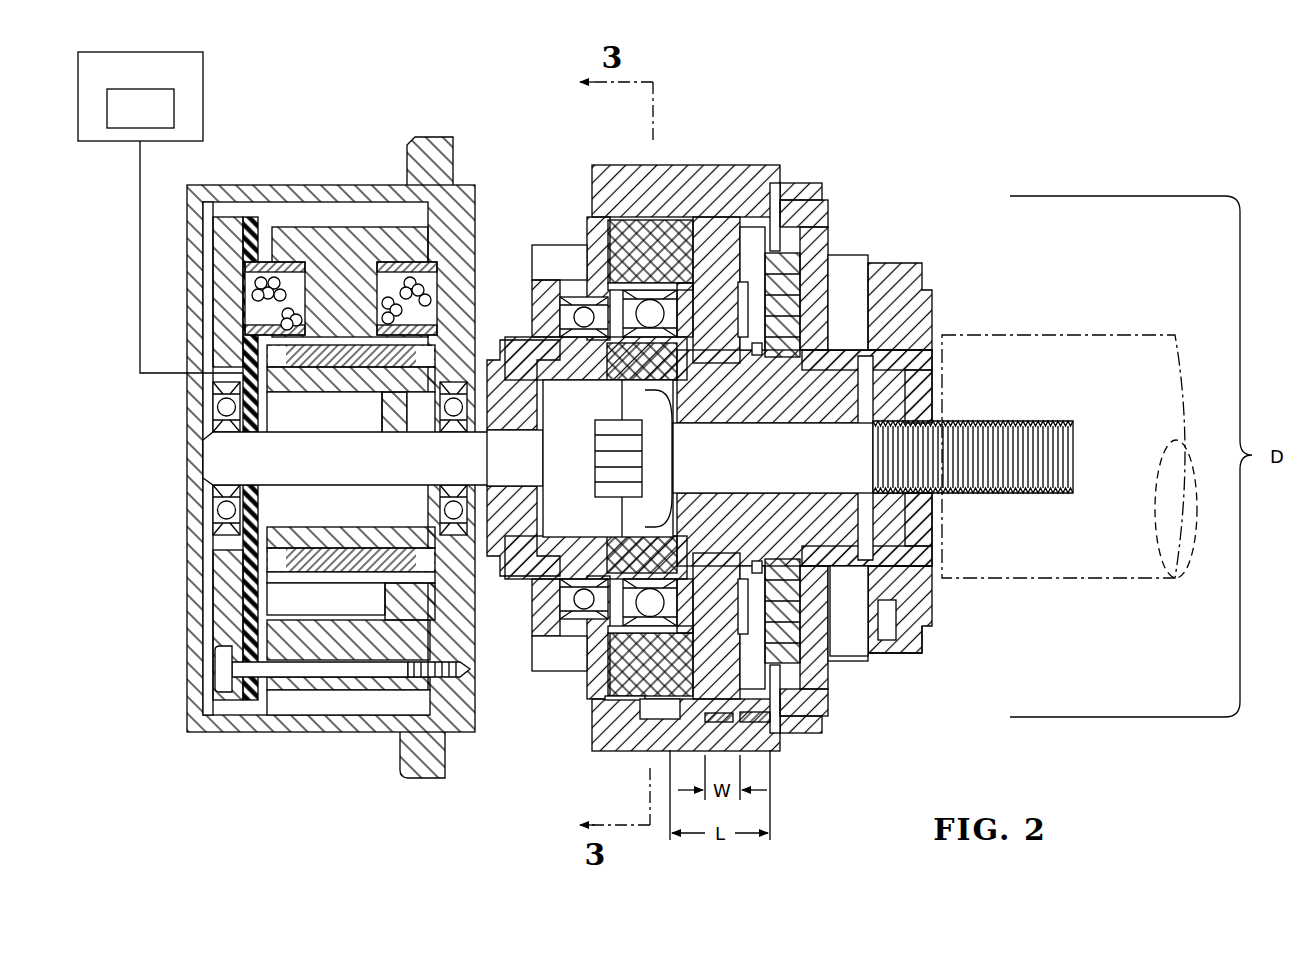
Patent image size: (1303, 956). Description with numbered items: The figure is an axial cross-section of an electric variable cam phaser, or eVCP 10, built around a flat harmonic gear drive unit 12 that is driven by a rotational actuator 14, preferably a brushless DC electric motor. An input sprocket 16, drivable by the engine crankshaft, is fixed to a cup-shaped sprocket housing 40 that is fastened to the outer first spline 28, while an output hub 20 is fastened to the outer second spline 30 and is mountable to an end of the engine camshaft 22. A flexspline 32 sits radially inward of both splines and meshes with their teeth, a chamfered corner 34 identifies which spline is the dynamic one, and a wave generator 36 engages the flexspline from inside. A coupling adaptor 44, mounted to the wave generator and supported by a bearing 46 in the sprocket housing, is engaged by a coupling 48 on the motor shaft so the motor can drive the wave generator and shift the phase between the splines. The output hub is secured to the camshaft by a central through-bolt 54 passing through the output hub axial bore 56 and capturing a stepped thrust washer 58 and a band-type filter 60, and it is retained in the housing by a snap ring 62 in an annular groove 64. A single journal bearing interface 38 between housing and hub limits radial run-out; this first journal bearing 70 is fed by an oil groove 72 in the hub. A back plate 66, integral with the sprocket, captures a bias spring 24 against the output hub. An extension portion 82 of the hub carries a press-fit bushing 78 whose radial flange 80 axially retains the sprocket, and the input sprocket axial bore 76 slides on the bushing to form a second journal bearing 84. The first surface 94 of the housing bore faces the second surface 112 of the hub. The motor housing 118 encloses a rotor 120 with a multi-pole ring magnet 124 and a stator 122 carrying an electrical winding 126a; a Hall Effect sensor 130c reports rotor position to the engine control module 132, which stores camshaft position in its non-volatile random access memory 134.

The eVCP 10 is at (1010, 138).
The flat harmonic gear drive unit 12 is at (650, 210).
The rotational actuator 14 is at (138, 740).
The input sprocket 16 is at (925, 290).
The output hub 20 is at (757, 212).
The engine camshaft 22 is at (1112, 578).
The bias spring 24 is at (787, 258).
The outer first spline 28 is at (650, 300).
The outer second spline 30 is at (683, 378).
The flexspline 32 is at (617, 228).
The chamfered corner 34 is at (645, 225).
The wave generator 36 is at (698, 370).
The journal bearing interface 38 is at (752, 714).
The sprocket housing 40 is at (827, 210).
The coupling adaptor 44 is at (523, 343).
The bearing 46 is at (570, 305).
The coupling 48 is at (510, 383).
The central through-bolt 54 is at (1000, 438).
The output hub axial bore 56 is at (895, 405).
The stepped thrust washer 58 is at (736, 300).
The filter 60 is at (905, 280).
The snap ring 62 is at (812, 180).
The annular groove 64 is at (775, 195).
The back plate 66 is at (820, 215).
The first journal bearing 70 is at (682, 716).
The oil groove 72 is at (645, 697).
The input sprocket axial bore 76 is at (867, 555).
The bushing 78 is at (898, 557).
The radial flange 80 is at (905, 570).
The extension portion 82 is at (925, 520).
The second journal bearing 84 is at (862, 352).
The first surface 94 is at (620, 697).
The second surface 112 is at (656, 262).
The motor housing 118 is at (470, 735).
The rotor 120 is at (326, 338).
The stator 122 is at (325, 690).
The multi-pole ring magnet 124 is at (358, 357).
The electrical winding 126a is at (288, 270).
The Hall Effect sensor 130c is at (300, 600).
The engine control module 132 is at (160, 212).
The non-volatile random access memory 134 is at (140, 108).